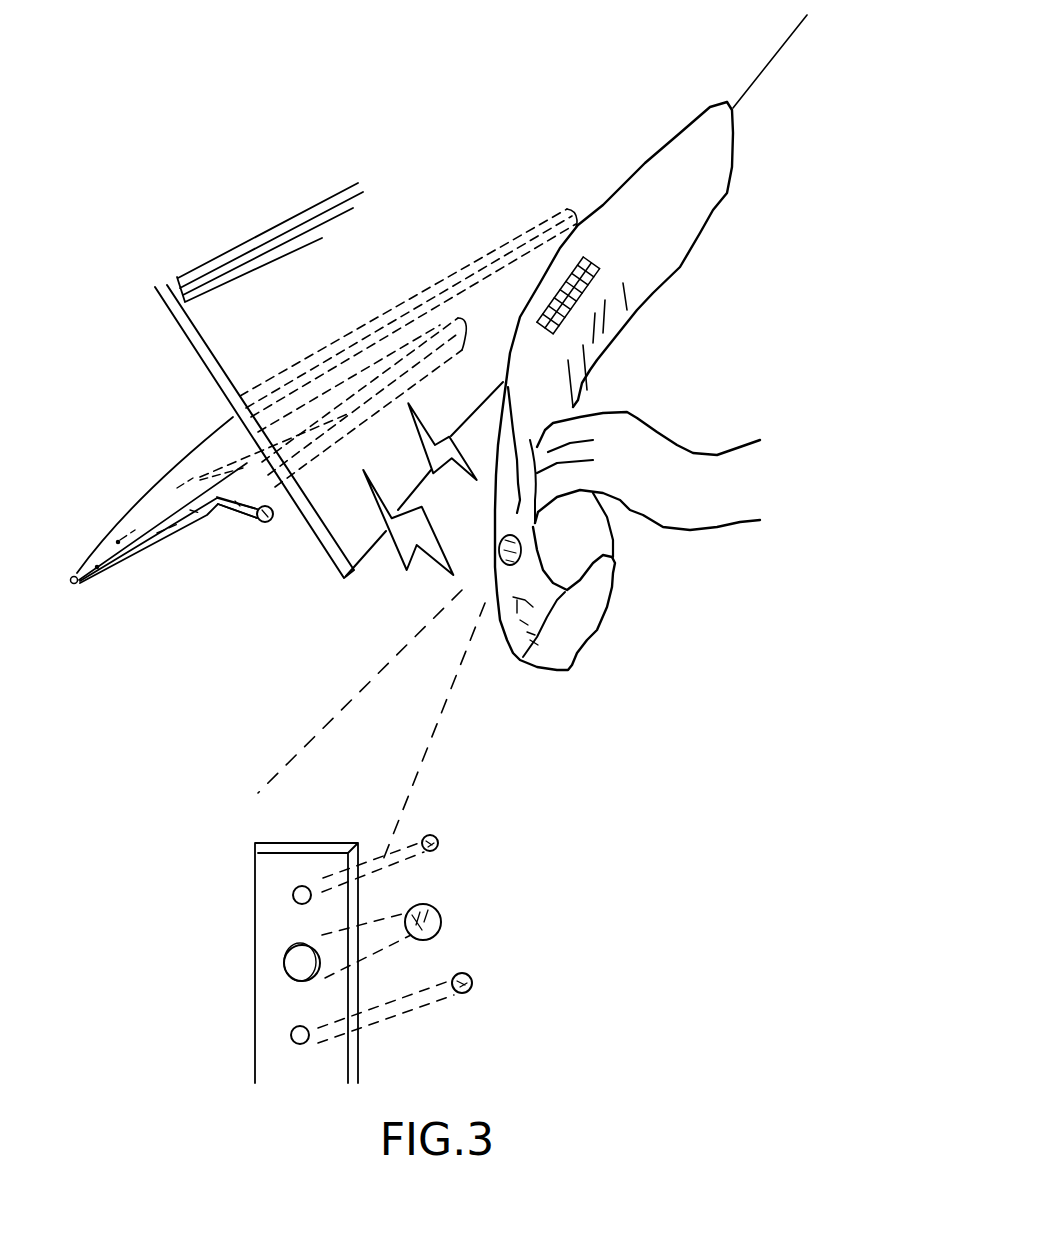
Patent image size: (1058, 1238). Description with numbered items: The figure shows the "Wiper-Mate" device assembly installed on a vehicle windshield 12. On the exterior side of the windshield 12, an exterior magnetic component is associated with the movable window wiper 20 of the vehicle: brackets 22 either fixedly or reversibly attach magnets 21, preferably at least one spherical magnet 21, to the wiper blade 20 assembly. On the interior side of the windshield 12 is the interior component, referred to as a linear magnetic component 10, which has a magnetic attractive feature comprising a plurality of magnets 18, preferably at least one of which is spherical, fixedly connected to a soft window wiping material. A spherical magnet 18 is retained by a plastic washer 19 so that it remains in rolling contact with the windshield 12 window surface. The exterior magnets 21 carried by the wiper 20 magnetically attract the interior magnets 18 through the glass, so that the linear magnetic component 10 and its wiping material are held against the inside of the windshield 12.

The linear magnetic component 10 is at (680, 290).
The windshield 12 is at (422, 220).
The spherical magnet 18 is at (500, 550).
The plastic washer 19 is at (270, 878).
The window wiper 20 is at (162, 527).
The spherical magnet 21 is at (273, 520).
The bracket 22 is at (237, 503).